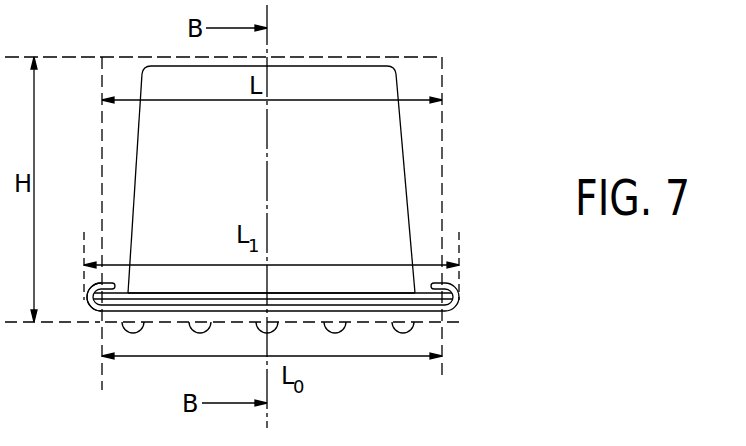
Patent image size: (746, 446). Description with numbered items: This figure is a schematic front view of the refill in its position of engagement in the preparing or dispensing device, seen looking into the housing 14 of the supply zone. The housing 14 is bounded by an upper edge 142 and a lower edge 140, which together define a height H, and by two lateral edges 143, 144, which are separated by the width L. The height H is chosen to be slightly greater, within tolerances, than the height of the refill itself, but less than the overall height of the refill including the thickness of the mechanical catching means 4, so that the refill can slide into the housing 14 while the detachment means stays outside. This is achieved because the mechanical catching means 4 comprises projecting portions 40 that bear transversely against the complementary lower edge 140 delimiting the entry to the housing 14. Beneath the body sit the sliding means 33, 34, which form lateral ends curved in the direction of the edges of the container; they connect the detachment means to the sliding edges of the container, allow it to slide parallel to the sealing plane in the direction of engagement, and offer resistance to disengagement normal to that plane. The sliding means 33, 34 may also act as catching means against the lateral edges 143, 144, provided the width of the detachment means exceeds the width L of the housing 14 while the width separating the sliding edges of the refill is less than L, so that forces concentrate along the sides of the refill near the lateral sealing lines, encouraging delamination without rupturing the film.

The mechanical catching means 4 is at (430, 332).
The housing 14 is at (289, 214).
The sliding means 33 is at (281, 327).
The sliding means 34 is at (87, 297).
The projecting portions 40 is at (311, 369).
The lower edge 140 is at (157, 334).
The upper edge 142 is at (381, 55).
The lateral edge 143 is at (442, 162).
The lateral edge 144 is at (100, 140).